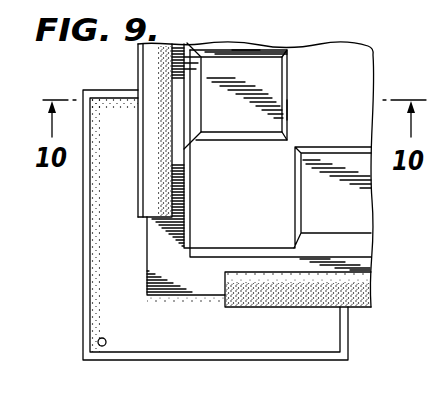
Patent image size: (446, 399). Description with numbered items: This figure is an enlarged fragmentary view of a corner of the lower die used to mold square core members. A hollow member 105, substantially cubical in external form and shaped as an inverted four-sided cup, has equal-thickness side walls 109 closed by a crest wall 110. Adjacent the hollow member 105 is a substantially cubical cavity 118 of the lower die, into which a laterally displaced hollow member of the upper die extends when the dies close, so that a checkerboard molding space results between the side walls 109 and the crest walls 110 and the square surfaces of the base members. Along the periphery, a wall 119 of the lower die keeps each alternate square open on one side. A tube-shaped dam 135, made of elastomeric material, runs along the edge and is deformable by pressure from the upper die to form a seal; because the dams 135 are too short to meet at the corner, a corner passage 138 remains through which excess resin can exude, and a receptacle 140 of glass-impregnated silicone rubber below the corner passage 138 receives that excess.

The hollow member 105 is at (250, 80).
The side wall 109 is at (240, 22).
The crest wall 110 is at (263, 97).
The cubical cavity 118 is at (328, 70).
The wall 119 is at (190, 62).
The dam 135 is at (157, 80).
The corner passage 138 is at (165, 252).
The receptacle 140 is at (113, 203).